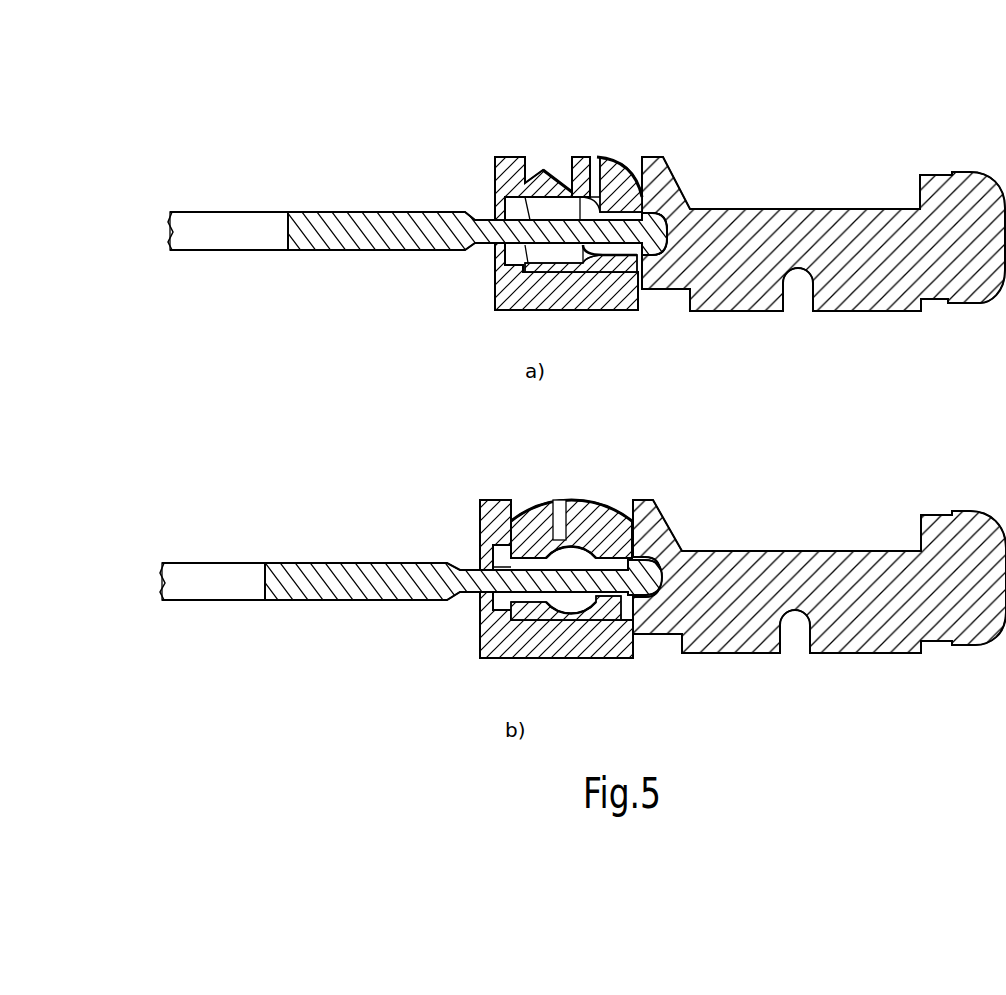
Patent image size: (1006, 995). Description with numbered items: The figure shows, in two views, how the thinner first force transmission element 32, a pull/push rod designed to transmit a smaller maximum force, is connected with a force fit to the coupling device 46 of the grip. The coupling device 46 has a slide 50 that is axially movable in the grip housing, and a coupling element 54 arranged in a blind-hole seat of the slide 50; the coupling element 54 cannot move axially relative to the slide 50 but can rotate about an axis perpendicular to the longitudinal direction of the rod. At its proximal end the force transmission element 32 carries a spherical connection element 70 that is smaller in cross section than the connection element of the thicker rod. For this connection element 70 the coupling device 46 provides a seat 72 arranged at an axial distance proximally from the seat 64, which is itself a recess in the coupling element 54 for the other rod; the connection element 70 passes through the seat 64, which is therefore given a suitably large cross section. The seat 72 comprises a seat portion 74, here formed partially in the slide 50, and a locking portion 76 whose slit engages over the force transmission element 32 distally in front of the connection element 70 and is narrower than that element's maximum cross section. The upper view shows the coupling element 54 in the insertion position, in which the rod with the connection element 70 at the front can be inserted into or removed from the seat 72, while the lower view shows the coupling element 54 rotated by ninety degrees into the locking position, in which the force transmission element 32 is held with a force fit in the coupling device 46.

The first force transmission element 32 is at (343, 223).
The coupling device 46 is at (720, 160).
The slide 50 is at (800, 217).
The coupling element 54 is at (578, 157).
The seat 64 is at (552, 208).
The connection element 70 is at (652, 192).
The seat 72 is at (623, 218).
The seat portion 74 is at (637, 255).
The locking portion 76 is at (627, 592).